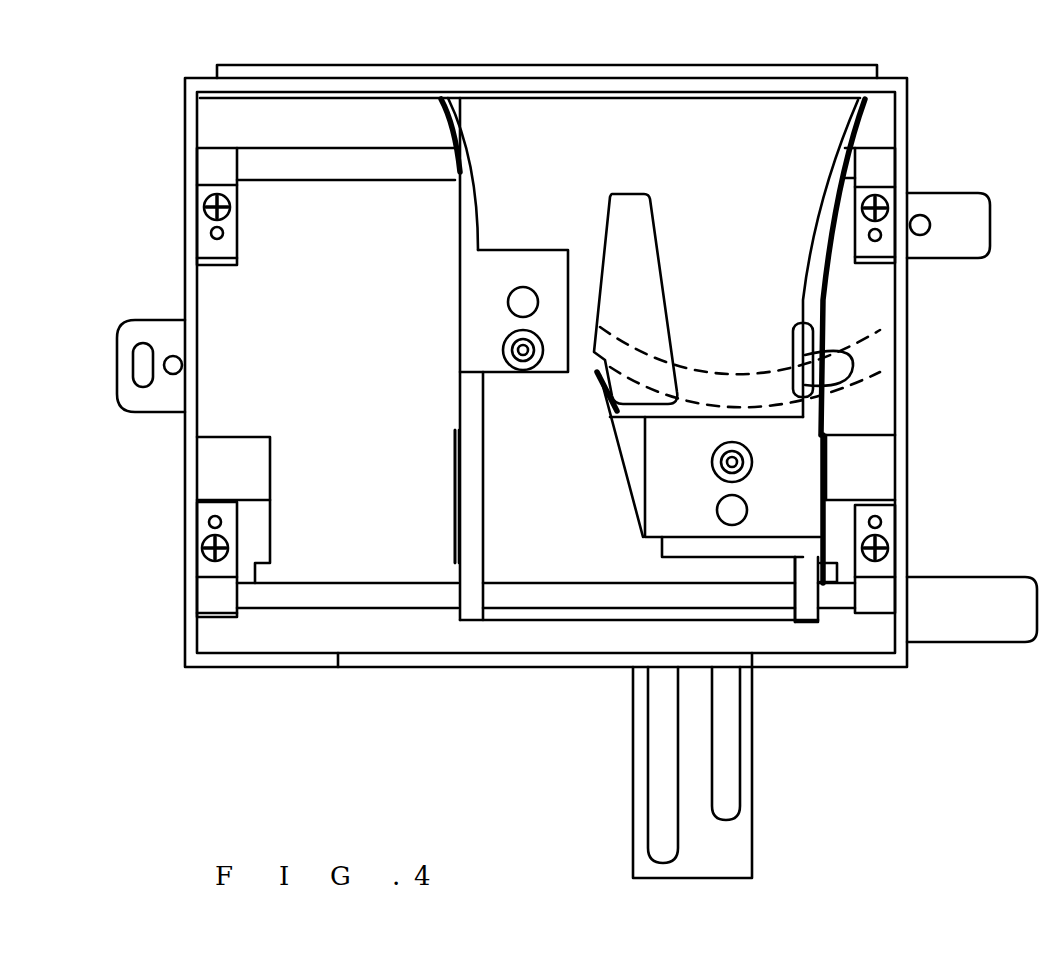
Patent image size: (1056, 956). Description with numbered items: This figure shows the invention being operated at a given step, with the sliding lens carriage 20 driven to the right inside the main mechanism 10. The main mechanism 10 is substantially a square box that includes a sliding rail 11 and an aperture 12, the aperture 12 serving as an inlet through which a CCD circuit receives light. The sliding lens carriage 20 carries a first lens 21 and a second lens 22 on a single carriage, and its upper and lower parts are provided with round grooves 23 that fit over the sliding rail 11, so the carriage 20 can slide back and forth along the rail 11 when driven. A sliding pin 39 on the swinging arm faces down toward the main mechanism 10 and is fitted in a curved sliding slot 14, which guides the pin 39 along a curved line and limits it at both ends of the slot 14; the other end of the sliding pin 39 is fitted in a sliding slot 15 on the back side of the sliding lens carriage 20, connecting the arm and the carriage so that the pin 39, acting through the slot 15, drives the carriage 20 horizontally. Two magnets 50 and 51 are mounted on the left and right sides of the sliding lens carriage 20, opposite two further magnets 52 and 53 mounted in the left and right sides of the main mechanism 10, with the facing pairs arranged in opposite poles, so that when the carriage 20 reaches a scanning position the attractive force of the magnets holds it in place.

The main mechanism 10 is at (285, 668).
The sliding rail 11 is at (310, 165).
The aperture 12 is at (583, 660).
The curved sliding slot 14 is at (726, 372).
The sliding slot 15 is at (882, 329).
The sliding lens carriage 20 is at (432, 262).
The first lens 21 is at (548, 372).
The second lens 22 is at (650, 518).
The round groove 23 is at (455, 163).
The sliding pin 39 is at (880, 372).
The magnet 50 is at (455, 480).
The magnet 51 is at (828, 433).
The magnet 52 is at (271, 483).
The magnet 53 is at (885, 478).